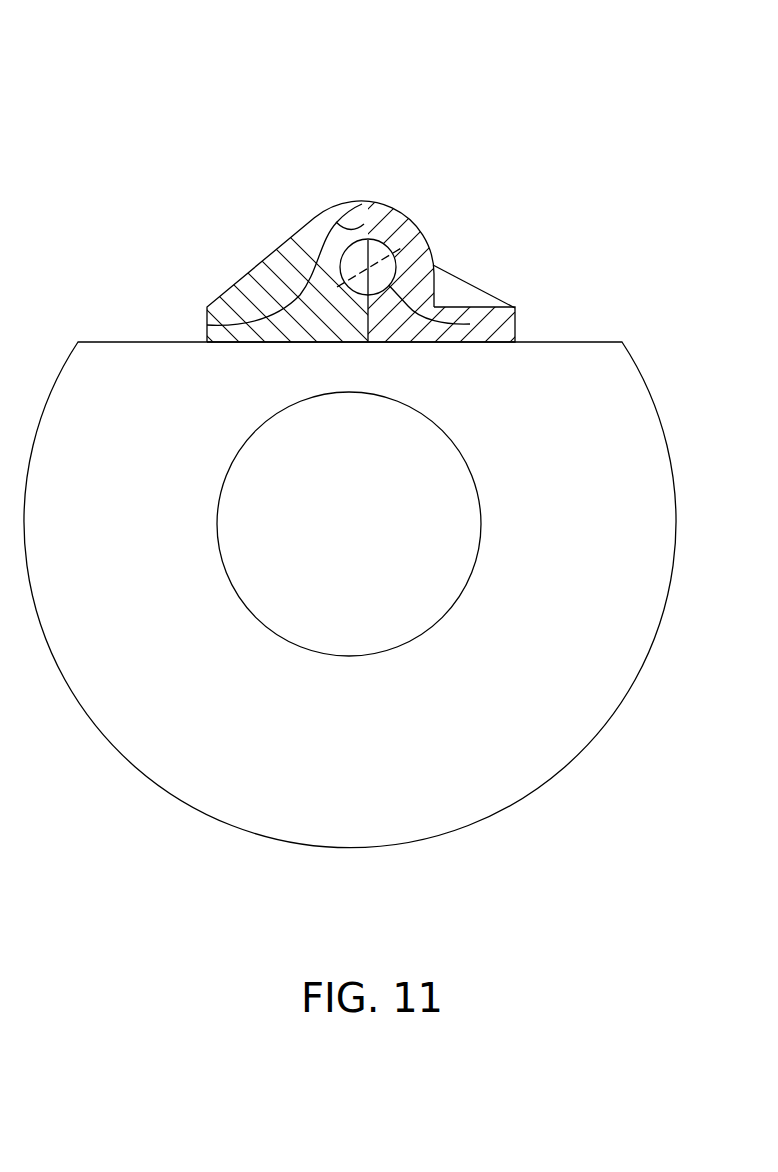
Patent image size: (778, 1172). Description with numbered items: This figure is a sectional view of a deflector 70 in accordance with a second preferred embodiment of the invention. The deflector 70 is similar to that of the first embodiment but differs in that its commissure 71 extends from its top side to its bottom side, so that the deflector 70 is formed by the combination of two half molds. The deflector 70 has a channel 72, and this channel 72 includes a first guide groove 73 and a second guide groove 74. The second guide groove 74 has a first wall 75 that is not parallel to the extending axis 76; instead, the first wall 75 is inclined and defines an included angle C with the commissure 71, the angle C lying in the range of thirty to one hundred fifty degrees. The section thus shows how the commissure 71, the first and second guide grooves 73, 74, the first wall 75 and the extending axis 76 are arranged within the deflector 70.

The deflector 70 is at (425, 194).
The commissure 71 is at (330, 212).
The channel 72 is at (357, 260).
The first guide groove 73 is at (397, 286).
The second guide groove 74 is at (300, 263).
The first wall 75 is at (377, 234).
The extending axis 76 is at (470, 324).